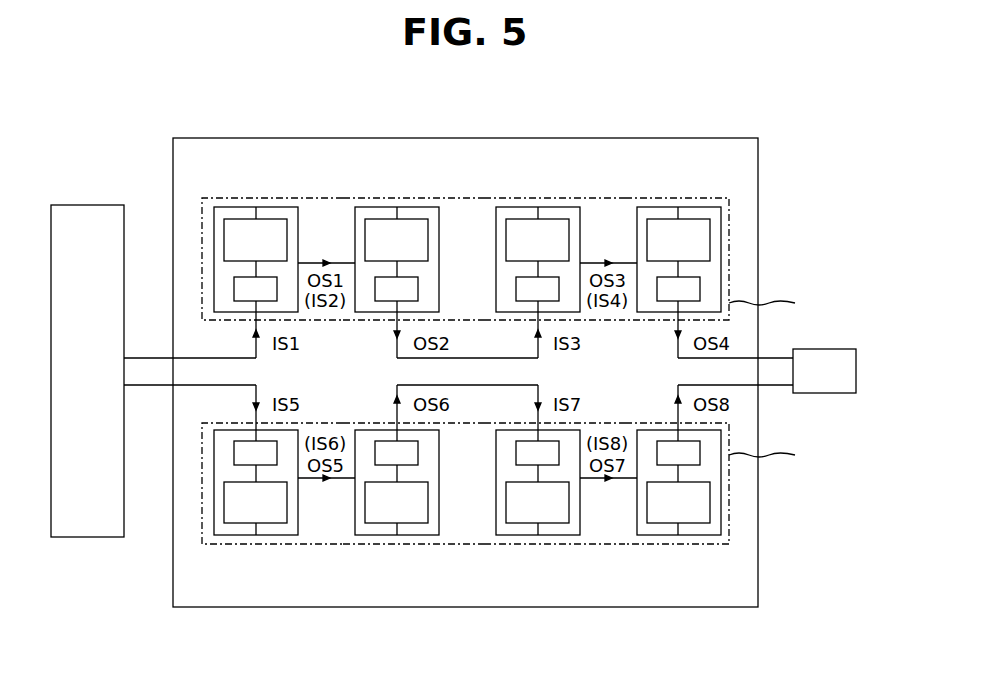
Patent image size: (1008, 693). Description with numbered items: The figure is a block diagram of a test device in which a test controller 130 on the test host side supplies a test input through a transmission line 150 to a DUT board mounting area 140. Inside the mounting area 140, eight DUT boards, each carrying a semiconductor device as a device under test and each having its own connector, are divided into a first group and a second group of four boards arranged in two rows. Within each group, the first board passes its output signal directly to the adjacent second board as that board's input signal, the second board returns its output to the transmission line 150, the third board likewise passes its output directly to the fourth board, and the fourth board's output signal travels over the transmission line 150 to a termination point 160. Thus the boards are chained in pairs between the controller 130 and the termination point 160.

The test controller 130 is at (87, 537).
The DUT board mounting area 140 is at (758, 175).
The transmission line 150 is at (150, 386).
The termination point 160 is at (825, 393).